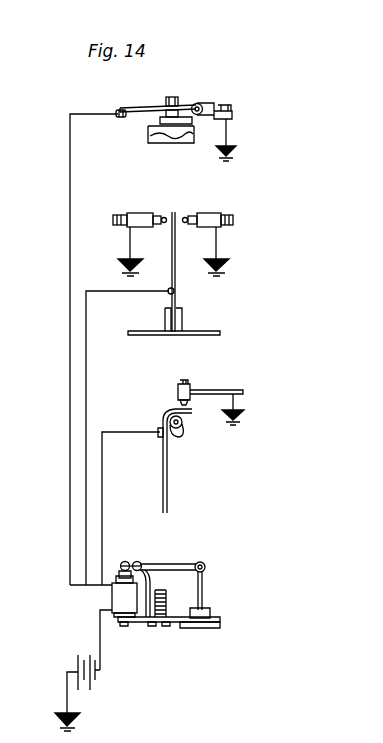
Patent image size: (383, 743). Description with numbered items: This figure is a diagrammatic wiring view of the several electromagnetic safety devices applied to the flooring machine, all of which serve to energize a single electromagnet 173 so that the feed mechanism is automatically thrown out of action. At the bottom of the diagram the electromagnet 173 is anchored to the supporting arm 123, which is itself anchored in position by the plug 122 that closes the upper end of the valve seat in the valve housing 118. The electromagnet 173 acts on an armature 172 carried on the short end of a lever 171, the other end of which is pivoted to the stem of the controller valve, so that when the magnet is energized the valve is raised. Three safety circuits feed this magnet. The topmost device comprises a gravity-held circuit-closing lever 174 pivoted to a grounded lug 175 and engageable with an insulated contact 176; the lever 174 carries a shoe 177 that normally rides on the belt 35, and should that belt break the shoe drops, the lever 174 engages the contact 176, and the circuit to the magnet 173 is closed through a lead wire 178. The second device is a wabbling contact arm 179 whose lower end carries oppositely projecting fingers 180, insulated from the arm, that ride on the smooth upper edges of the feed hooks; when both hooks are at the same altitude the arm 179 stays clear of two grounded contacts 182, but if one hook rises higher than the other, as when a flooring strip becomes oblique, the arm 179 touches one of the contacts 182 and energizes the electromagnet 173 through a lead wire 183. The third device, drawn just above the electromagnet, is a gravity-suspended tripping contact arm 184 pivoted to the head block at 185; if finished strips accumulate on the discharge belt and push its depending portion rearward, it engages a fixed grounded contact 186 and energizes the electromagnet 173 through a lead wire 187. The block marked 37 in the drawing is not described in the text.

The belt 35 is at (156, 124).
The block 37 is at (180, 130).
The valve housing 118 is at (201, 643).
The plug 122 is at (209, 619).
The supporting arm 123 is at (173, 622).
The lever 171 is at (160, 566).
The armature 172 is at (116, 568).
The electromagnet 173 is at (119, 599).
The circuit-closing lever 174 is at (160, 97).
The grounded lug 175 is at (224, 108).
The insulated contact 176 is at (120, 111).
The shoe 177 is at (185, 113).
The lead wire 178 is at (65, 166).
The wabbling contact arm 179 is at (178, 268).
The fingers 180 is at (200, 336).
The grounded contacts 182 is at (176, 214).
The lead wire 183 is at (89, 396).
The tripping contact arm 184 is at (168, 500).
The pivot 185 is at (181, 425).
The fixed grounded contact 186 is at (191, 390).
The lead wire 187 is at (103, 516).